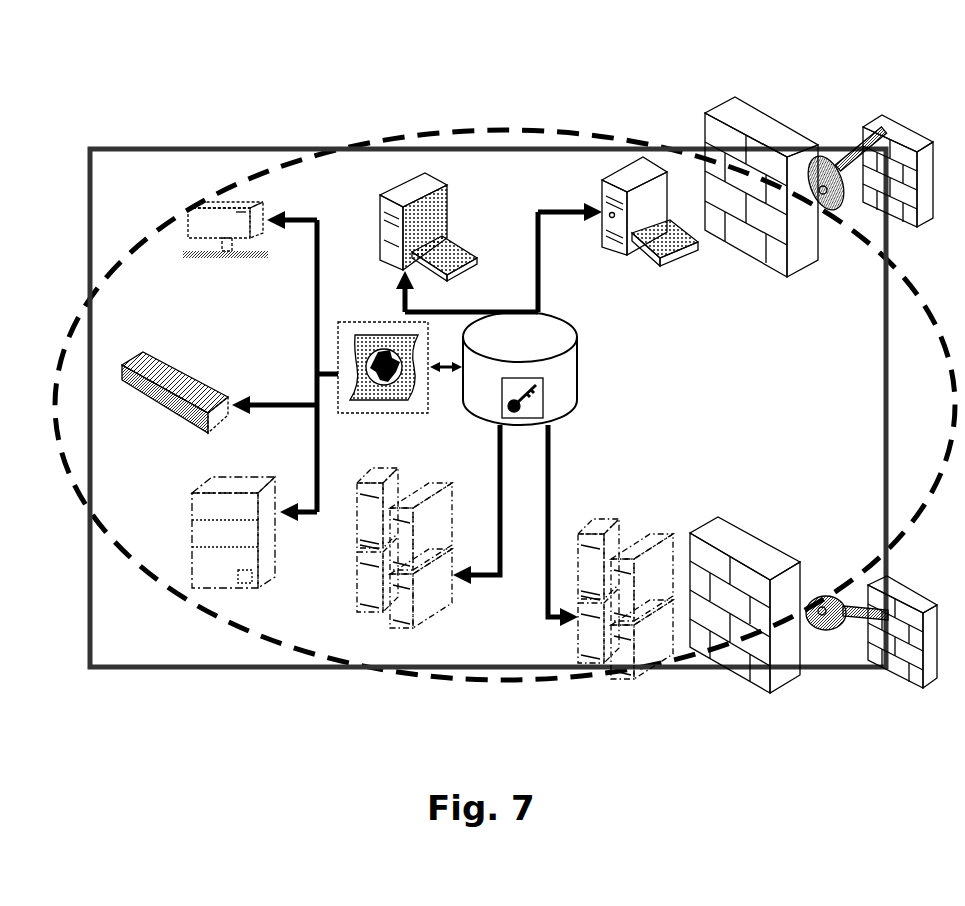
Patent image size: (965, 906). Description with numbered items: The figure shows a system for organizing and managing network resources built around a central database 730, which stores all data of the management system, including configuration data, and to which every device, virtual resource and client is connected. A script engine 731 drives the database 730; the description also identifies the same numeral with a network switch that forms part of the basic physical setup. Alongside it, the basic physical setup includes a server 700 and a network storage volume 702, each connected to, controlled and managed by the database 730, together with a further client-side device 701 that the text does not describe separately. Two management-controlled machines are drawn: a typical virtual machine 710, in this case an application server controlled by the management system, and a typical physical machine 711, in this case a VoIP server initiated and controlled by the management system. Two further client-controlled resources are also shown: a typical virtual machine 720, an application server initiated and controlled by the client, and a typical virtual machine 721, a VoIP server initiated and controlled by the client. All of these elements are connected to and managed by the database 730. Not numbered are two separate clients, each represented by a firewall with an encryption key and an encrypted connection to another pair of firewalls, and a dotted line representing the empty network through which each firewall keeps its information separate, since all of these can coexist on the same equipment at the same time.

The server 700 is at (217, 568).
The client device 701 is at (165, 388).
The network storage volume 702 is at (227, 200).
The virtual machine 710 is at (377, 610).
The physical machine 711 is at (423, 173).
The virtual machine 720 is at (600, 663).
The virtual machine 721 is at (615, 172).
The database 730 is at (557, 398).
The script engine 731 is at (392, 402).